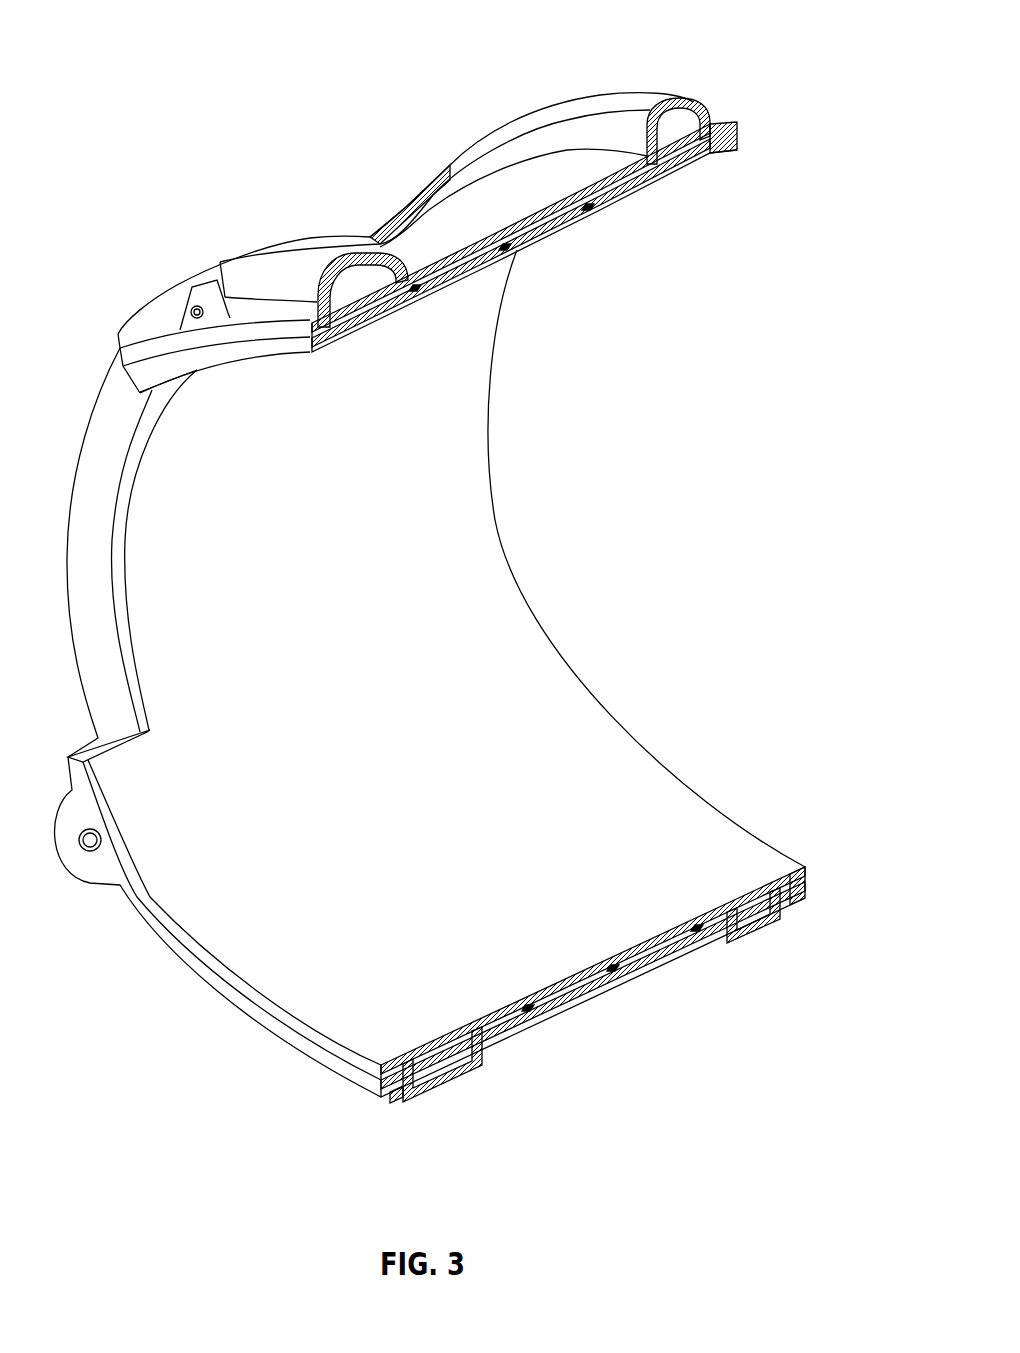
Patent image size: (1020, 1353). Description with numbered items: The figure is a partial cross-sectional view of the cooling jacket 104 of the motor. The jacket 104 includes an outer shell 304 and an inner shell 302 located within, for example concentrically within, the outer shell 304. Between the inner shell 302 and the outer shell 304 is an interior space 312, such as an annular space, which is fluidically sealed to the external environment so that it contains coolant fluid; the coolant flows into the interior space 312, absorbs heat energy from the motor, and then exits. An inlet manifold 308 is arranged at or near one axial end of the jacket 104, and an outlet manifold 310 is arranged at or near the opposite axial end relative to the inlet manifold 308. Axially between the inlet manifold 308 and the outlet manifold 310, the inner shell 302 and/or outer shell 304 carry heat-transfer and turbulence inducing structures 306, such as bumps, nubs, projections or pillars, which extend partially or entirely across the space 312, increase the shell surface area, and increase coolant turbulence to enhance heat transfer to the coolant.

The jacket 104 is at (805, 333).
The inner shell 302 is at (733, 153).
The outer shell 304 is at (710, 100).
The heat-transfer and turbulence inducing structures 306 is at (600, 210).
The inlet manifold 308 is at (690, 135).
The outlet manifold 310 is at (348, 302).
The interior space 312 is at (695, 165).